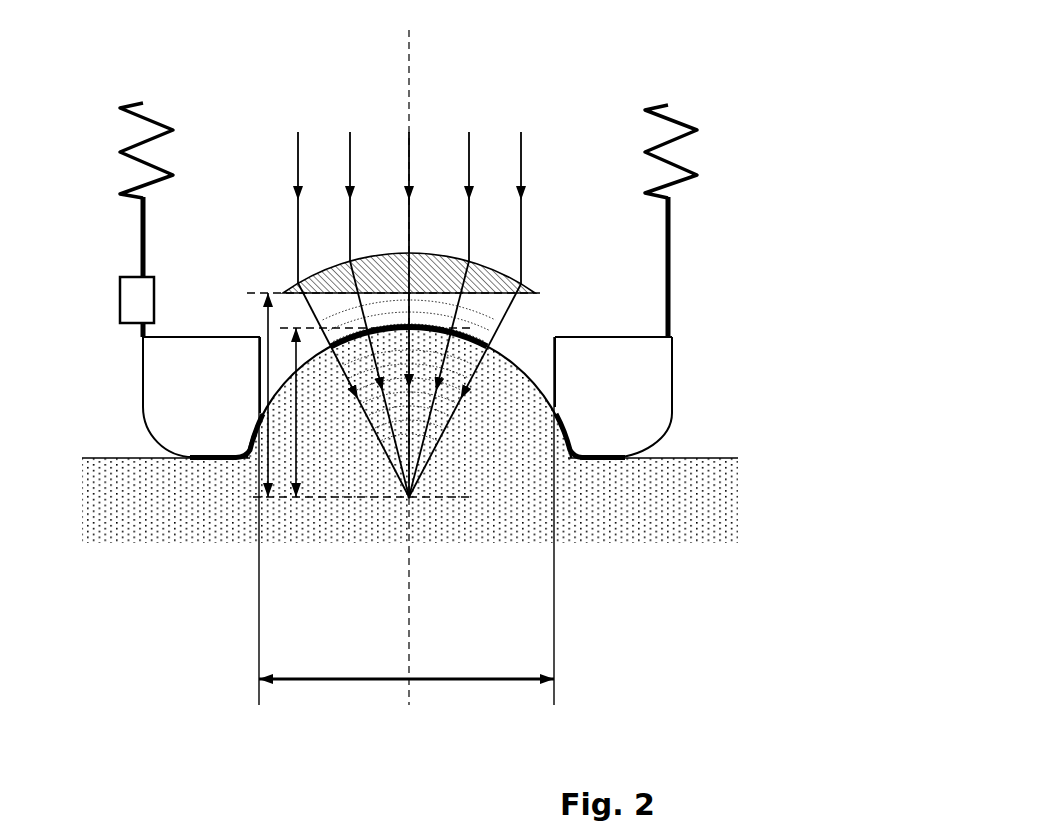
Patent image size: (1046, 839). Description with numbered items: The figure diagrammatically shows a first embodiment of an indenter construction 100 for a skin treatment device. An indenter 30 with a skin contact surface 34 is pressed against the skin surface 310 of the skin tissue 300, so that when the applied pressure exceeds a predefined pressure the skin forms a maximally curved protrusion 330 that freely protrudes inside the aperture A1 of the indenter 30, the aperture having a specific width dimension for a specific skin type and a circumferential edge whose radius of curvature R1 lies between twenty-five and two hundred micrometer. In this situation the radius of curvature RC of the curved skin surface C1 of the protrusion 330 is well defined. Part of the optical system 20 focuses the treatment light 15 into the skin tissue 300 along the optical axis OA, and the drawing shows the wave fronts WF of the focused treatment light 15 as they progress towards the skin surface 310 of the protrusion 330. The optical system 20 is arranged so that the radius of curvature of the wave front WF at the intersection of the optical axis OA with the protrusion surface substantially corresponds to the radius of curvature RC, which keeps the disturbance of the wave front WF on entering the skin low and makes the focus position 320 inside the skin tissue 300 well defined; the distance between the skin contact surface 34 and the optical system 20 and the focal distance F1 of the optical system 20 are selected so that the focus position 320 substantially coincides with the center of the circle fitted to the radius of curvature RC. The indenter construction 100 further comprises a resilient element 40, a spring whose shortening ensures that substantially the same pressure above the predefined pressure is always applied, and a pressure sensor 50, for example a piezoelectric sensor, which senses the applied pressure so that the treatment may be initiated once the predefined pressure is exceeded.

The indenter construction 100 is at (727, 43).
The resilient element 40 is at (714, 139).
The pressure sensor 50 is at (122, 297).
The optical system 20 is at (314, 266).
The treatment light 15 is at (522, 225).
The curved protrusion 330 is at (514, 352).
The indenter 30 is at (692, 337).
The skin contact surface 34 is at (233, 442).
The skin surface 310 is at (721, 455).
The skin tissue 300 is at (703, 510).
The focus position 320 is at (412, 505).
The optical axis OA is at (387, 358).
The wave front WF is at (322, 310).
The curved surface C1 is at (465, 340).
The radius of curvature of circumferential edge R1 is at (591, 453).
The focal length F1 is at (268, 457).
The radius of curvature RC is at (298, 462).
The aperture A1 is at (406, 521).